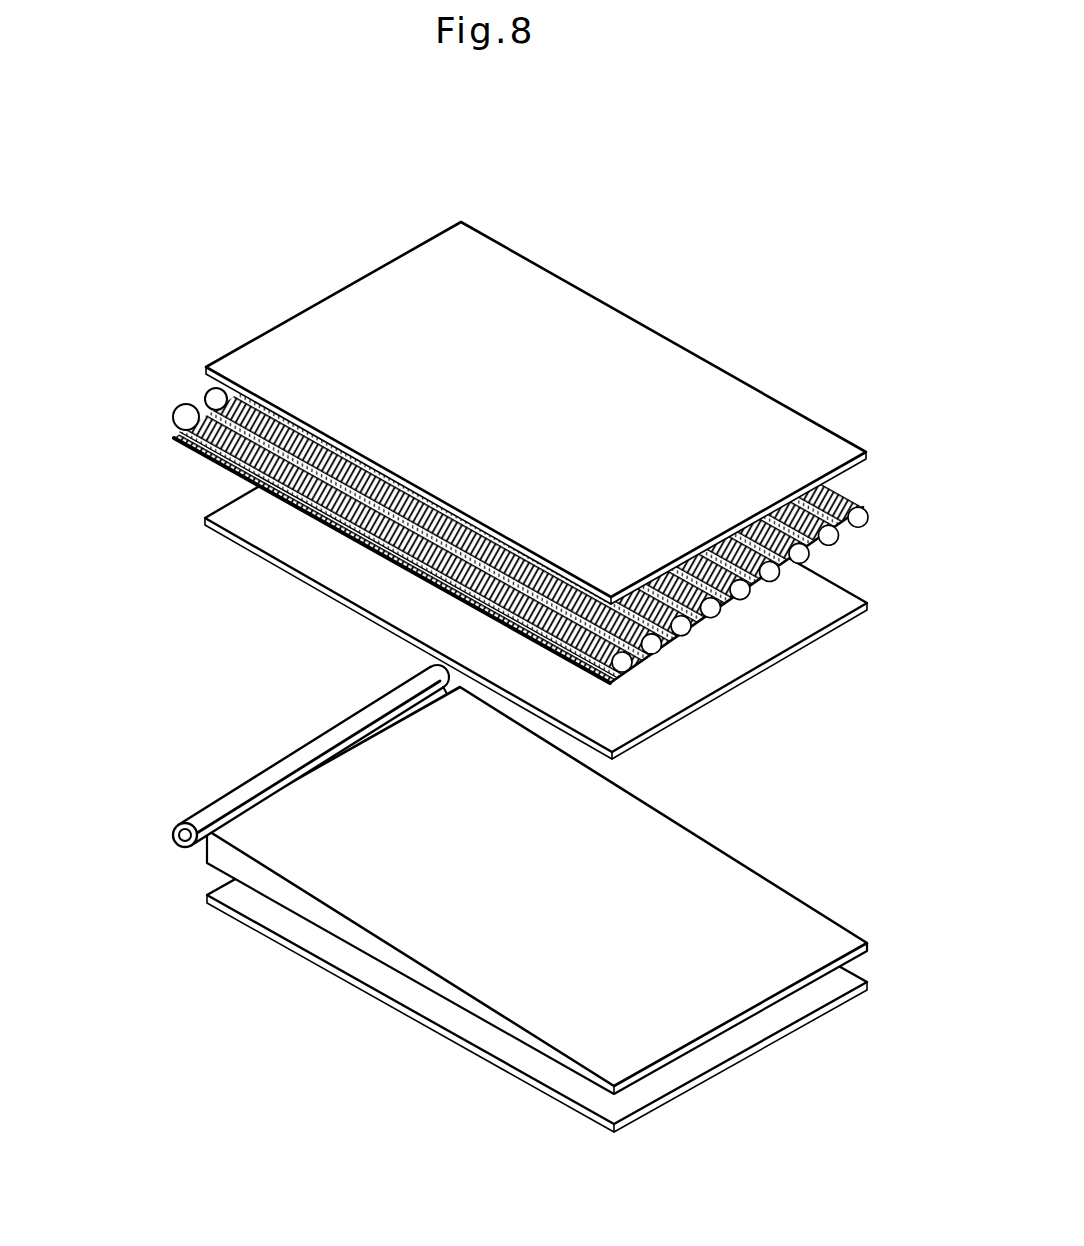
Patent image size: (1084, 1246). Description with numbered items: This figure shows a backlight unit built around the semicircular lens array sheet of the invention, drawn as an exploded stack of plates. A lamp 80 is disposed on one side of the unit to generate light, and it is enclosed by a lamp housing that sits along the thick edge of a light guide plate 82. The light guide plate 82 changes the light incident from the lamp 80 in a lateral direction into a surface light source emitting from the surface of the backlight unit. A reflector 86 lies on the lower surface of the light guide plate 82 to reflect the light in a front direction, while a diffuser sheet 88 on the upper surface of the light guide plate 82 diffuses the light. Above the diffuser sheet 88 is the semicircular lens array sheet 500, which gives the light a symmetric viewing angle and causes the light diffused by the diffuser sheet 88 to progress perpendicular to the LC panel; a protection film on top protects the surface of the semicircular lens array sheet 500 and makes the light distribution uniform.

The lamp 80 is at (178, 836).
The light guide plate 82 is at (708, 874).
The reflector 86 is at (462, 1028).
The diffuser sheet 88 is at (847, 605).
The semicircular lens array sheet 500 is at (866, 500).